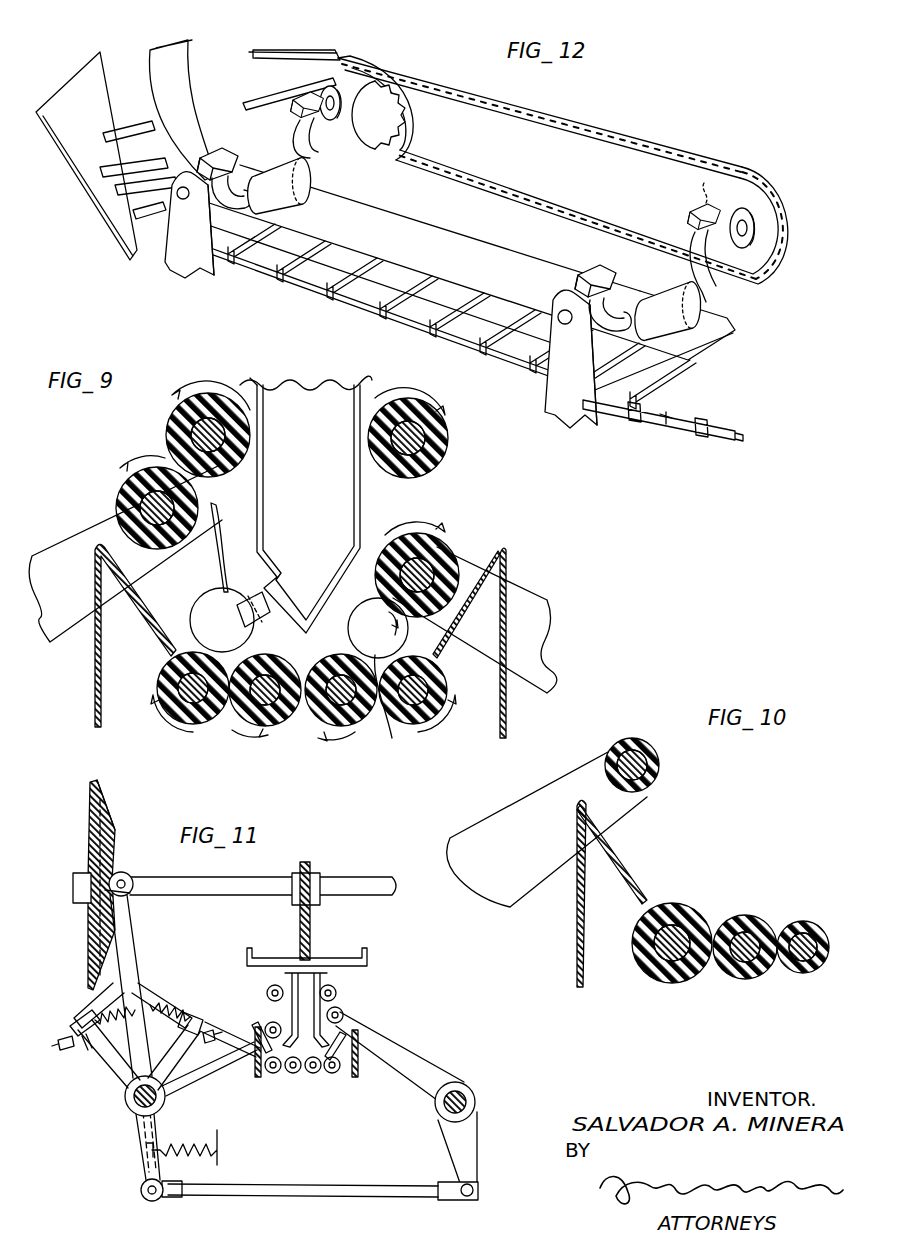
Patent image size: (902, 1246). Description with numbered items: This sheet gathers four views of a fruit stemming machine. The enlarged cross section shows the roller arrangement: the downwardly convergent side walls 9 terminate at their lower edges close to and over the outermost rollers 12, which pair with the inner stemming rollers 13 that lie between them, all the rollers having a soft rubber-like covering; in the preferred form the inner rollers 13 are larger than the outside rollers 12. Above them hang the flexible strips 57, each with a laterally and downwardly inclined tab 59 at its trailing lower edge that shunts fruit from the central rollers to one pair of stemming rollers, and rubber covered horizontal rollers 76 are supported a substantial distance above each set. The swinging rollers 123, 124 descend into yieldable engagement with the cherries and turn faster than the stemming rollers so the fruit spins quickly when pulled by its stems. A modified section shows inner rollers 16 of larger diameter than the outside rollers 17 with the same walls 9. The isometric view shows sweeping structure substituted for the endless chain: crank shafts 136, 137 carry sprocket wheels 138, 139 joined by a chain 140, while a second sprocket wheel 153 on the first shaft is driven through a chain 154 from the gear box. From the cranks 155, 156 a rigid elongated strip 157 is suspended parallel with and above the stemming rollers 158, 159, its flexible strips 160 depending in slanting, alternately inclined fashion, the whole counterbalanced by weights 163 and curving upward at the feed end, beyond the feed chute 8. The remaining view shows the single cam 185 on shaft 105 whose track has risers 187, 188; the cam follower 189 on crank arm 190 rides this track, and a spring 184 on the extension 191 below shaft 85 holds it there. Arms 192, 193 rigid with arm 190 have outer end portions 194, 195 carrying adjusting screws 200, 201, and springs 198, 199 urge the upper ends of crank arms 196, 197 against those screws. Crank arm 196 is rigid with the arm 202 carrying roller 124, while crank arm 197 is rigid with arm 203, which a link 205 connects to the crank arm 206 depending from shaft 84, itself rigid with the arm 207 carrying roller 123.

In FIG. 12, the feed chute 8 is at (84, 154).
In FIG. 12, the horizontally elongated strip 157 is at (195, 112).
In FIG. 12, the strips 160 is at (366, 311).
In FIG. 12, the crank 156 is at (718, 335).
In FIG. 12, the chain 140 is at (537, 208).
In FIG. 12, the sprocket wheel 139 is at (765, 247).
In FIG. 12, the second sprocket wheel 153 is at (392, 98).
In FIG. 12, the sprocket wheel 138 is at (396, 128).
In FIG. 12, the chain 154 is at (299, 54).
In FIG. 12, the crank shaft 136 is at (331, 125).
In FIG. 12, the crank shaft 137 is at (728, 273).
In FIG. 12, the weights 163 is at (207, 152).
In FIG. 12, the crank 155 is at (287, 193).
In FIG. 12, the stemming roller 158 is at (628, 418).
In FIG. 12, the stemming roller 159 is at (668, 418).
In FIG. 9, the side walls 9 is at (158, 602).
In FIG. 10, the side walls 9 is at (623, 864).
In FIG. 9, the flexible strips 57 is at (324, 507).
In FIG. 9, the rubber covered horizontal rollers 76 is at (350, 382).
In FIG. 9, the tab 59 is at (267, 603).
In FIG. 9, the roller 124 is at (120, 497).
In FIG. 11, the roller 124 is at (268, 1036).
In FIG. 9, the roller 123 is at (443, 547).
In FIG. 11, the roller 123 is at (342, 1008).
In FIG. 9, the outermost rollers 12 is at (200, 727).
In FIG. 11, the outermost rollers 12 is at (331, 1075).
In FIG. 9, the inner stemming rollers 13 is at (308, 728).
In FIG. 11, the inner stemming rollers 13 is at (311, 1073).
In FIG. 10, the outside rollers 17 is at (683, 983).
In FIG. 10, the inner rollers 16 is at (793, 982).
In FIG. 11, the cam 185 is at (92, 826).
In FIG. 11, the riser 188 is at (115, 820).
In FIG. 11, the shaft 105 is at (238, 873).
In FIG. 11, the cam follower 189 is at (128, 878).
In FIG. 11, the arm 207 is at (402, 1053).
In FIG. 11, the shaft 84 is at (466, 1098).
In FIG. 11, the crank arm 206 is at (471, 1140).
In FIG. 11, the link 205 is at (287, 1186).
In FIG. 11, the arm 203 is at (143, 1168).
In FIG. 11, the extension 191 is at (133, 1140).
In FIG. 11, the spring 184 is at (192, 1157).
In FIG. 11, the shaft 85 is at (160, 1102).
In FIG. 11, the crank arm 190 is at (134, 964).
In FIG. 11, the riser 187 is at (112, 940).
In FIG. 11, the arm 193 is at (100, 1015).
In FIG. 11, the arm 192 is at (156, 995).
In FIG. 11, the spring 198 is at (180, 1002).
In FIG. 11, the crank arm 197 is at (110, 1065).
In FIG. 11, the spring 199 is at (70, 1022).
In FIG. 11, the adjusting screw 201 is at (60, 1046).
In FIG. 11, the outer end portion 195 is at (85, 1052).
In FIG. 11, the outer end portion 194 is at (204, 1024).
In FIG. 11, the adjusting screw 200 is at (217, 1058).
In FIG. 11, the crank arm 196 is at (180, 1075).
In FIG. 11, the arm 202 is at (207, 1090).